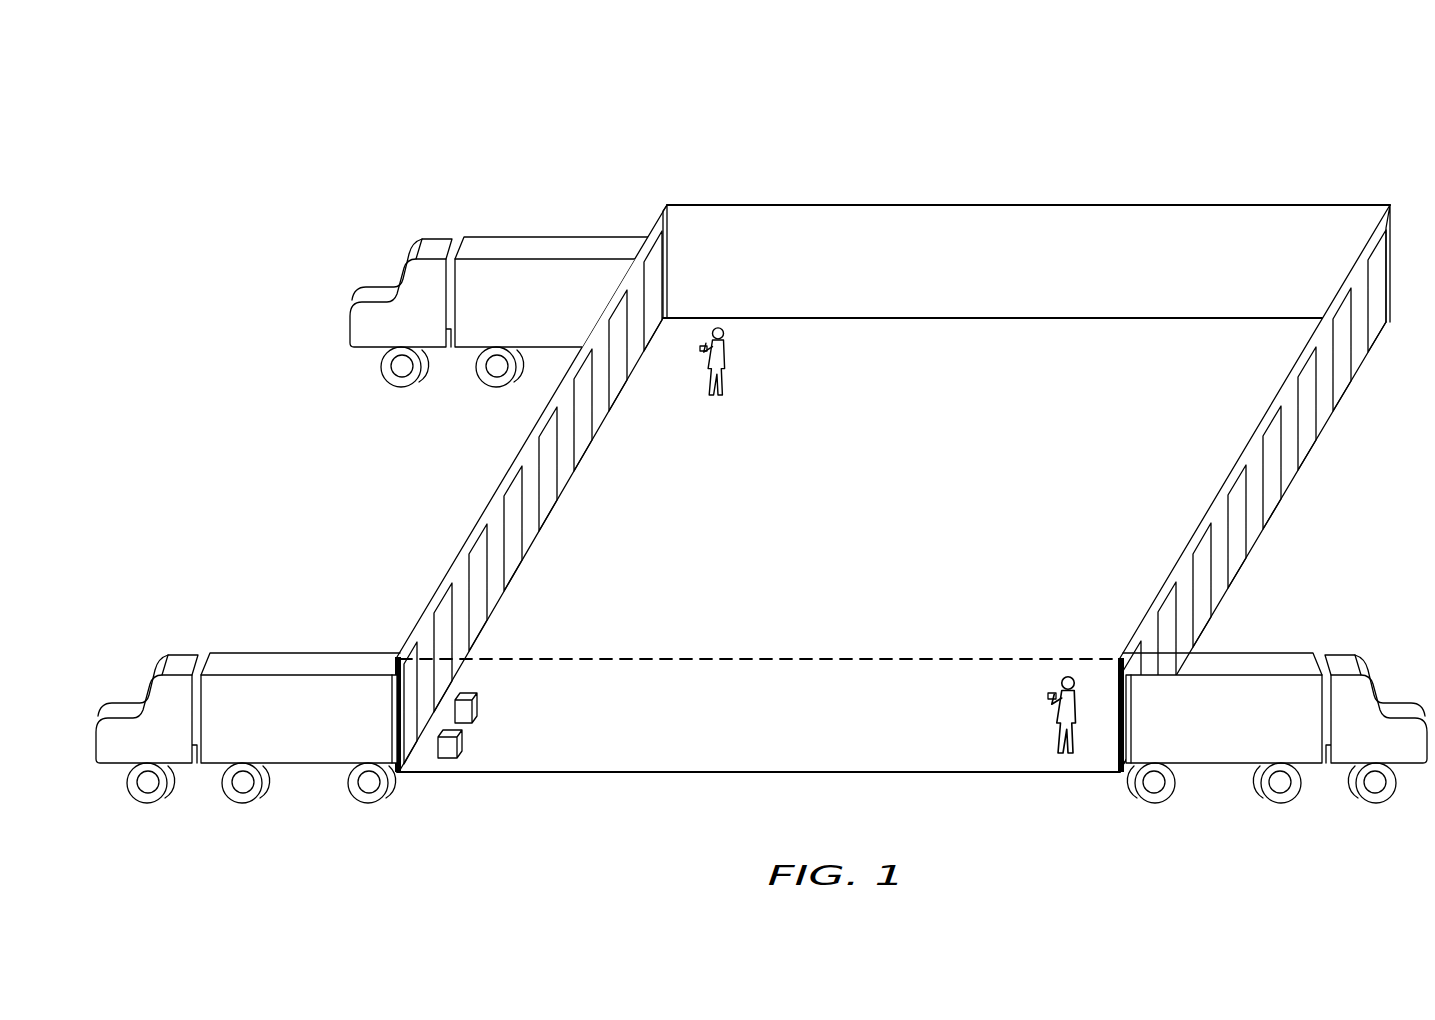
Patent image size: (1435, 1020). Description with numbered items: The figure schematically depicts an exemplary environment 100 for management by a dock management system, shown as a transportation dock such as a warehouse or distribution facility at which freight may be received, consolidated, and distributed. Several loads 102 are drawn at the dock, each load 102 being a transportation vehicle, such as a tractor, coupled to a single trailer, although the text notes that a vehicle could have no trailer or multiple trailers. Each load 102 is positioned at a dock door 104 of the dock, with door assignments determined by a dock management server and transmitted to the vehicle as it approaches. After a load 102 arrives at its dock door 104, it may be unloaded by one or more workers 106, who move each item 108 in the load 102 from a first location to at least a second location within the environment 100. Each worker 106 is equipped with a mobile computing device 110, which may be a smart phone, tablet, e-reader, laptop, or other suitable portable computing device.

The environment 100 is at (310, 166).
The load 102 is at (537, 246).
The dock door 104 is at (657, 293).
The worker 106 is at (728, 363).
The item 108 is at (478, 707).
The mobile computing device 110 is at (703, 352).